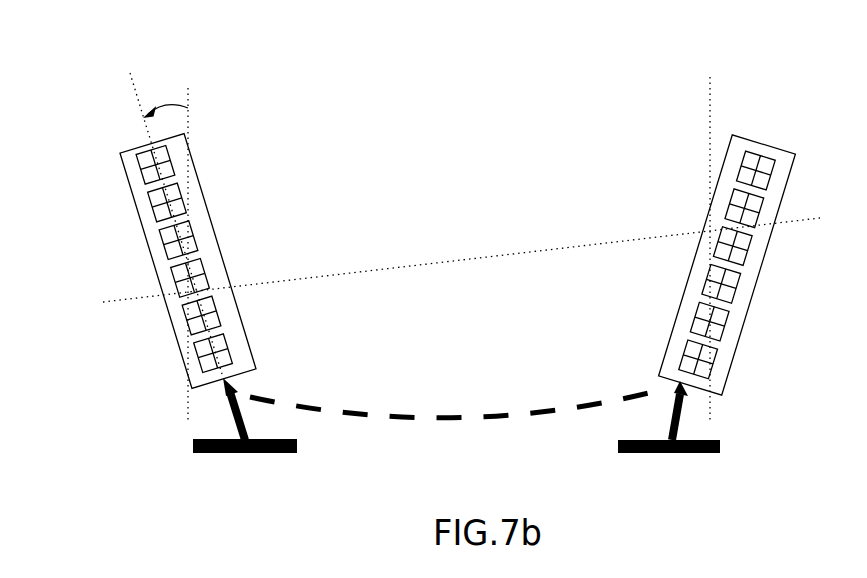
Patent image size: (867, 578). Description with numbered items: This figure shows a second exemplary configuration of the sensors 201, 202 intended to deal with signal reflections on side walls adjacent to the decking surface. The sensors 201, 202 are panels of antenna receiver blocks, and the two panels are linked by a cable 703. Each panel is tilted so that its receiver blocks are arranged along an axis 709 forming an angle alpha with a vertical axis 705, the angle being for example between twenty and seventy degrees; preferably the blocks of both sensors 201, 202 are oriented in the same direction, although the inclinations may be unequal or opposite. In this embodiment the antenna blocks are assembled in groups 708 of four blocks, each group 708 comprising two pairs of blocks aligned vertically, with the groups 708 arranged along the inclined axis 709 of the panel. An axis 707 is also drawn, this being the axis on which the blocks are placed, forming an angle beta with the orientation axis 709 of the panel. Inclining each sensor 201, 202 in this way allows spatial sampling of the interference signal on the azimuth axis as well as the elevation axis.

The sensor 201 is at (144, 261).
The sensor 202 is at (683, 308).
The cable 703 is at (463, 413).
The vertical axis 705 is at (188, 119).
The axis 707 is at (432, 262).
The group 708 is at (138, 180).
The axis 709 is at (136, 92).